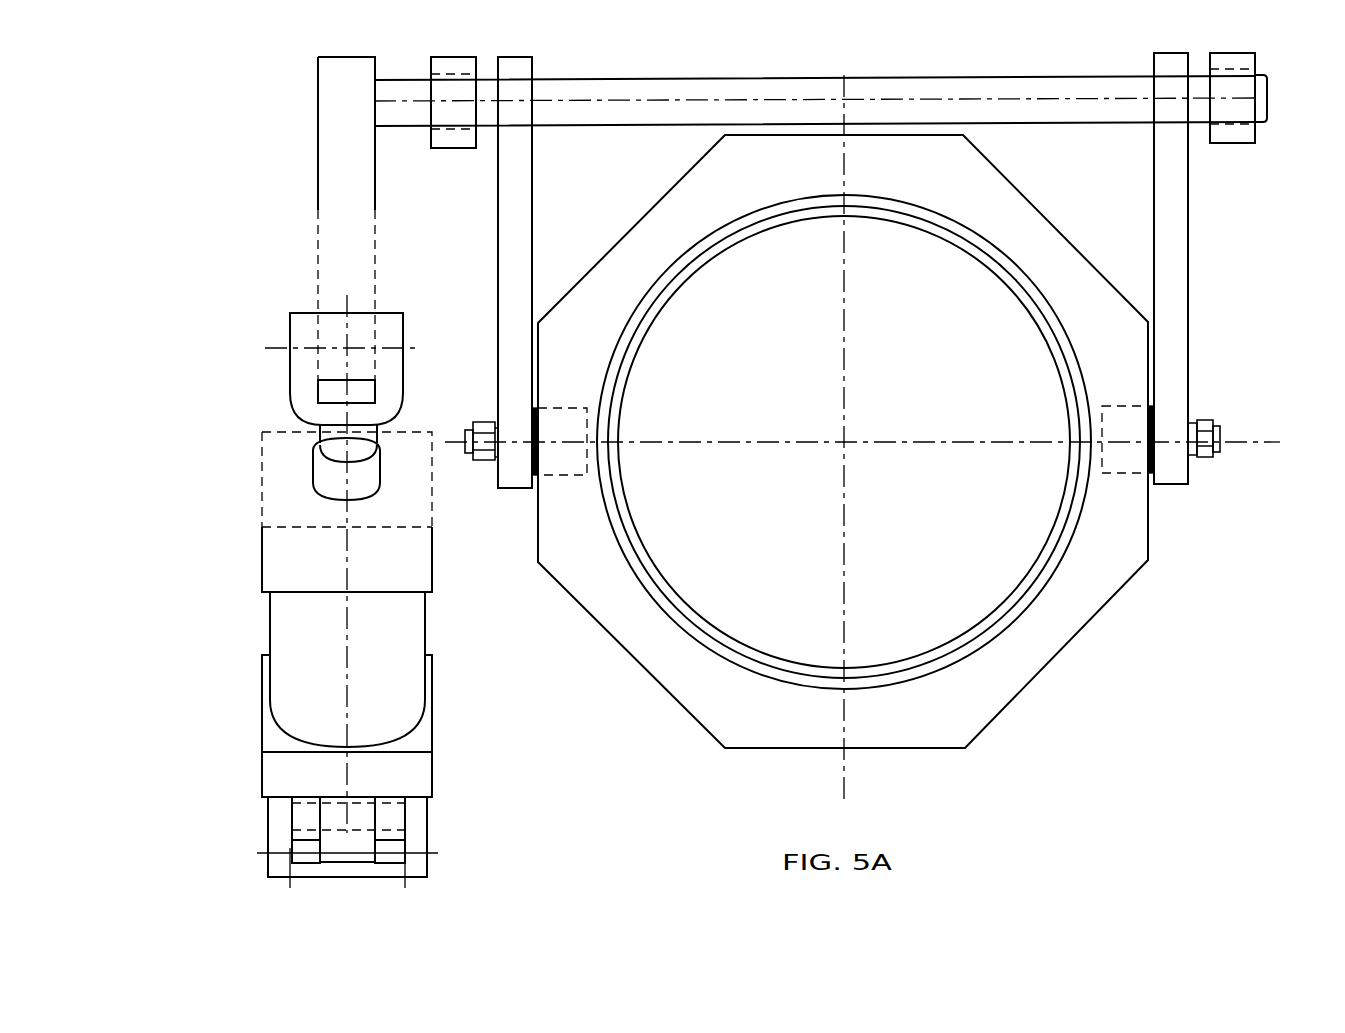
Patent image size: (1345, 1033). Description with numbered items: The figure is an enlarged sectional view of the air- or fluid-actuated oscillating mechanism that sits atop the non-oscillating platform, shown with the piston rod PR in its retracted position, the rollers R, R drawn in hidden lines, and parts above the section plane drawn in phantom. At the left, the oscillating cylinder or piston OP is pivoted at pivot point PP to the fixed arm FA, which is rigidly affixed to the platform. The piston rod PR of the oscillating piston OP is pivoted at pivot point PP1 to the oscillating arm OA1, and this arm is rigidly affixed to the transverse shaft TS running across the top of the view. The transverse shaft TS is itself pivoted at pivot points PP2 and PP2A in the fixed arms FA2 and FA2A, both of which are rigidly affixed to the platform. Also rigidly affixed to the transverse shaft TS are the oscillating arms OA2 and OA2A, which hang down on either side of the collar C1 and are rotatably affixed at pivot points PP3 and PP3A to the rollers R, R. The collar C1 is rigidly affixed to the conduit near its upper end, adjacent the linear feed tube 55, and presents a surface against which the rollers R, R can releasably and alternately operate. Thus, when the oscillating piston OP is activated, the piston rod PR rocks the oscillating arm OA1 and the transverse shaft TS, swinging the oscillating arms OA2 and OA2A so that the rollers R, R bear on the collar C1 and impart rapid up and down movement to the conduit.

The transverse shaft TS is at (400, 126).
The oscillating arm OA1 is at (318, 153).
The fixed arm FA2 is at (450, 57).
The pivot point PP2 is at (431, 128).
The oscillating arm OA2 is at (498, 243).
The fixed arm FA2A is at (1209, 53).
The pivot point PP2A is at (1260, 77).
The oscillating arm OA2A is at (1188, 190).
The collar C1 is at (1025, 683).
The linear feed tube 55 is at (1015, 578).
The roller R is at (567, 477).
The pivot point PP3 is at (466, 443).
The pivot point PP3A is at (1222, 437).
The pivot point PP1 is at (290, 348).
The piston rod PR is at (337, 450).
The oscillating piston OP is at (425, 650).
The fixed arm FA is at (367, 870).
The pivot point PP is at (405, 817).